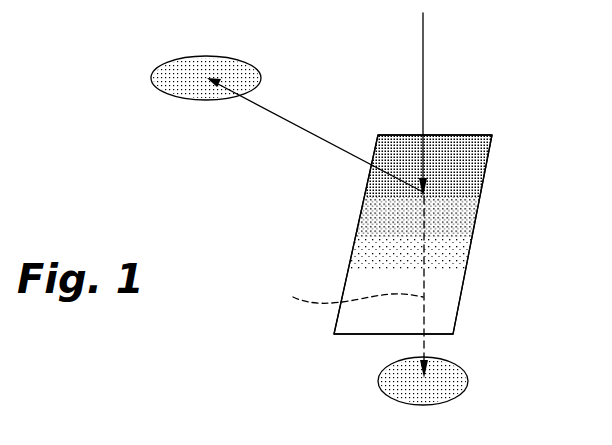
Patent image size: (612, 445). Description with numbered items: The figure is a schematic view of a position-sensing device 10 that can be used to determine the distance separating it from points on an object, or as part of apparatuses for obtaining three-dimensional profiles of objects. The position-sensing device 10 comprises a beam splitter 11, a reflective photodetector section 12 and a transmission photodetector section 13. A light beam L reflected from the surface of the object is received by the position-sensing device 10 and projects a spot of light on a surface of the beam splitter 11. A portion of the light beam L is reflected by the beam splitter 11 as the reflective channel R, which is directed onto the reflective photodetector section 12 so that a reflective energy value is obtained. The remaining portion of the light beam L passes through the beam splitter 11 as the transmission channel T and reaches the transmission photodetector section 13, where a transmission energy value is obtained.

The position-sensing device 10 is at (510, 132).
The beam splitter 11 is at (473, 240).
The reflective photodetector section 12 is at (250, 130).
The transmission photodetector section 13 is at (470, 338).
The light beam L is at (424, 65).
The reflective channel R is at (300, 130).
The transmission channel T is at (348, 297).